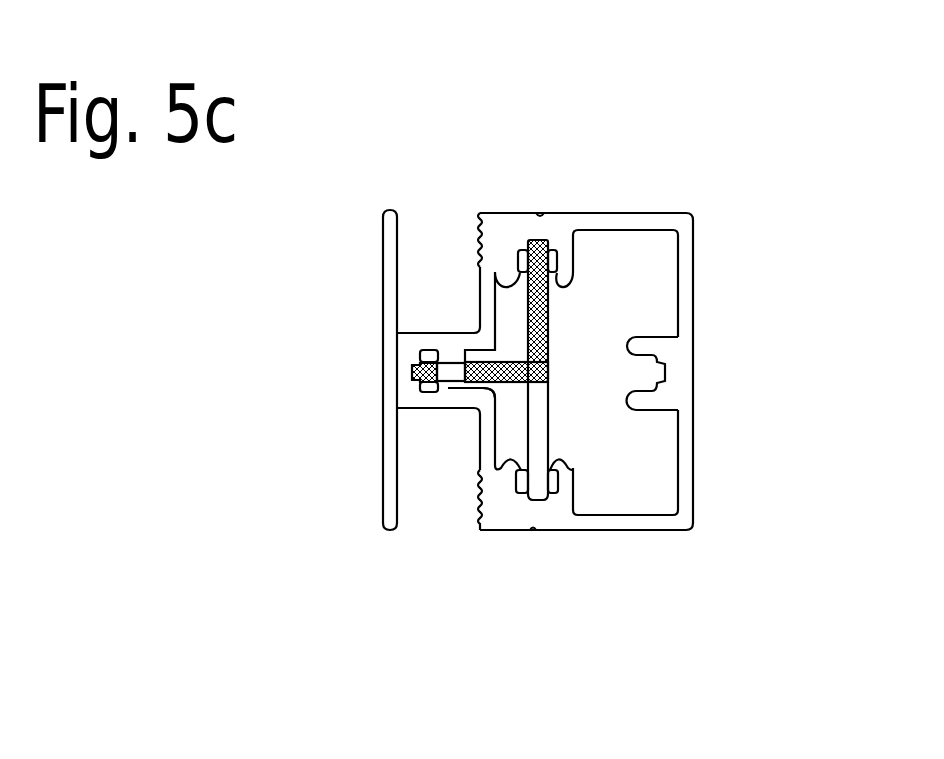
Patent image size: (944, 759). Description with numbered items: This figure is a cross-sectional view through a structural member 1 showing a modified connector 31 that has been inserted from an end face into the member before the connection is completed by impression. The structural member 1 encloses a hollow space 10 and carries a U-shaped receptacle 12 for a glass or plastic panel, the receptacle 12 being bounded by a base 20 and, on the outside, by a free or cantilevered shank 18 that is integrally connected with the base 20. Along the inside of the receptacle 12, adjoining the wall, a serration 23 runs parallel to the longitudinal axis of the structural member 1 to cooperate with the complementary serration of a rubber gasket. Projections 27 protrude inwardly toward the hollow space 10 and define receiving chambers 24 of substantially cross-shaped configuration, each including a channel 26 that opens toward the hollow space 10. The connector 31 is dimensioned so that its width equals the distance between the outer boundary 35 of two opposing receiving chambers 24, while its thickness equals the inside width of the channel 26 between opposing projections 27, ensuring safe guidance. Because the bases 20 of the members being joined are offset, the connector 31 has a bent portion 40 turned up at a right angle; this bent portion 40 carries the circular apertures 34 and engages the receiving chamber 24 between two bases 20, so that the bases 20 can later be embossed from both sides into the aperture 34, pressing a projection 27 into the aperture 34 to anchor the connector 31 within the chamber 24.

The structural member 1 is at (706, 277).
The hollow space 10 is at (652, 493).
The receptacle 12 is at (403, 250).
The cantilevered shank 18 is at (392, 236).
The base 20 is at (430, 410).
The serration 23 is at (483, 238).
The receiving chamber 24 is at (646, 378).
The channel 26 is at (478, 357).
The projection 27 is at (443, 386).
The connector 31 is at (549, 312).
The circular aperture 34 is at (448, 372).
The outer boundary 35 is at (537, 240).
The bent portion 40 is at (500, 384).